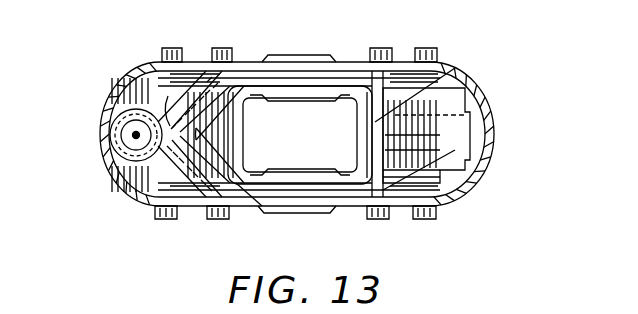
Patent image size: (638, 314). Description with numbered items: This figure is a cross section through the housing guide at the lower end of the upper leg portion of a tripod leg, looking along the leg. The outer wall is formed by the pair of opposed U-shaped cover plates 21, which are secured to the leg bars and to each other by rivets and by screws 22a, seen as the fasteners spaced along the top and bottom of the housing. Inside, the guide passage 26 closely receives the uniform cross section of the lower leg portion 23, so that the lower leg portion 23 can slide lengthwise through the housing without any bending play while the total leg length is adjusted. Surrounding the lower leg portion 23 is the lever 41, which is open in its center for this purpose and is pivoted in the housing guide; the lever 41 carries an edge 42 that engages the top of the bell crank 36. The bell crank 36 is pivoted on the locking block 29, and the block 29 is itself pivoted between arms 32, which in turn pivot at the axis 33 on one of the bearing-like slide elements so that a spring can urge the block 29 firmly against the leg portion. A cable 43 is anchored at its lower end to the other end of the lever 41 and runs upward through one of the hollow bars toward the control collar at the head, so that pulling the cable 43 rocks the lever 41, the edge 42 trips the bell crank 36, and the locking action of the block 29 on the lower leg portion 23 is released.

The cover plates 21 is at (118, 177).
The screws 22a is at (424, 66).
The lower leg portion 23 is at (307, 108).
The guide passage 26 is at (250, 197).
The locking block 29 is at (446, 178).
The arms 32 is at (446, 198).
The axis 33 is at (204, 76).
The bell crank 36 is at (462, 120).
The lever 41 is at (172, 112).
The edge 42 is at (425, 76).
The cable 43 is at (134, 135).